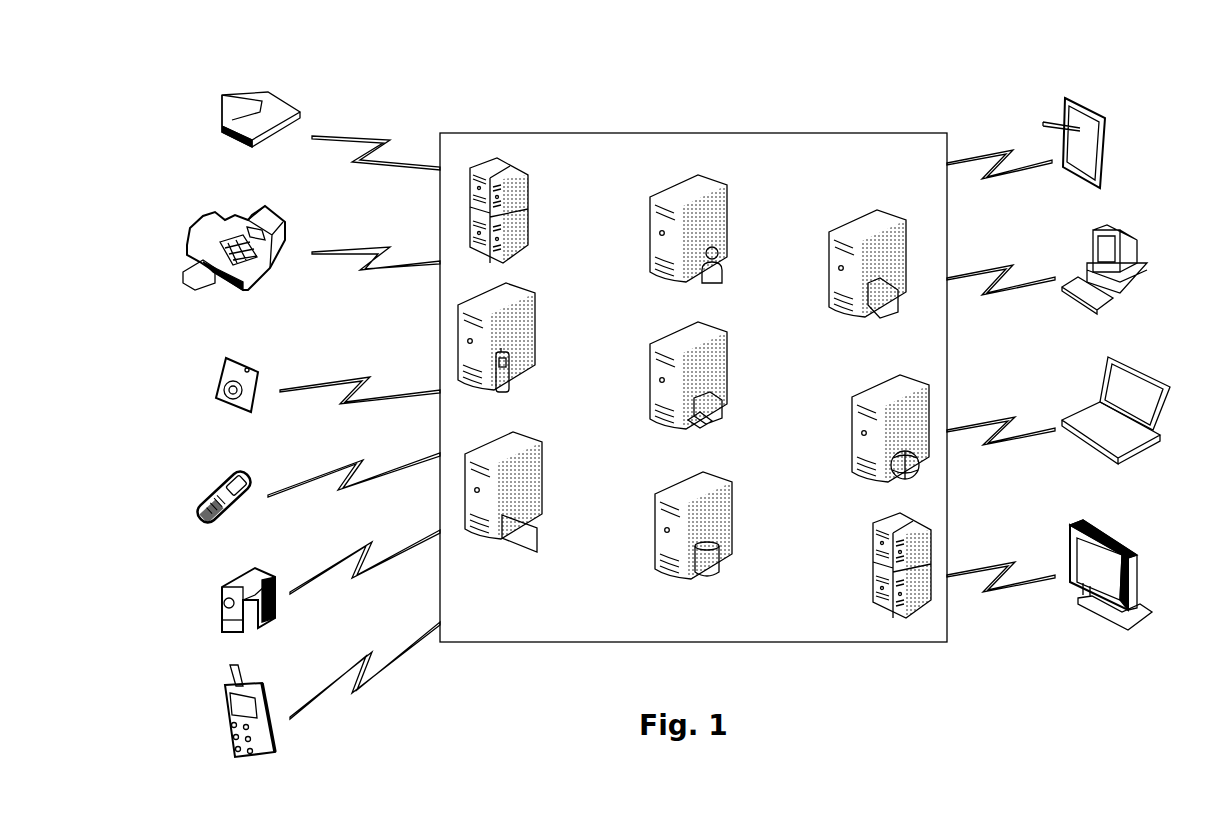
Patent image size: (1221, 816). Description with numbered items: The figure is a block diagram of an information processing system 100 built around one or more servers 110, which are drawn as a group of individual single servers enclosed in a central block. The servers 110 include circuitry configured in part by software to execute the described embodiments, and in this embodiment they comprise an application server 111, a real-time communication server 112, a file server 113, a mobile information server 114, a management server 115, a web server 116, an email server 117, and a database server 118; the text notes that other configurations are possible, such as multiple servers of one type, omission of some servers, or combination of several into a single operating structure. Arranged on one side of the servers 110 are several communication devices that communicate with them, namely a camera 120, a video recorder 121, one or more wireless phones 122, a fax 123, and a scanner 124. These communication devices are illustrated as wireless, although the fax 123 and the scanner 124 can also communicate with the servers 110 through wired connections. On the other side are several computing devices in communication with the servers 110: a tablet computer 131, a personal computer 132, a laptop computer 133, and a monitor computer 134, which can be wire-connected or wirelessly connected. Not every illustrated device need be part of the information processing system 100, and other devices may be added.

The information processing system 100 is at (593, 46).
The servers 110 is at (778, 128).
The application server 111 is at (500, 150).
The real-time communication server 112 is at (667, 180).
The file server 113 is at (836, 216).
The mobile information server 114 is at (535, 326).
The management server 115 is at (714, 321).
The web server 116 is at (881, 374).
The email server 117 is at (545, 443).
The database server 118 is at (728, 480).
The camera 120 is at (239, 356).
The video recorder 121 is at (244, 562).
The wireless phones 122 is at (241, 469).
The fax 123 is at (264, 201).
The scanner 124 is at (267, 91).
The tablet computer 131 is at (1083, 94).
The personal computer 132 is at (1111, 226).
The laptop computer 133 is at (1118, 353).
The monitor computer 134 is at (1089, 519).